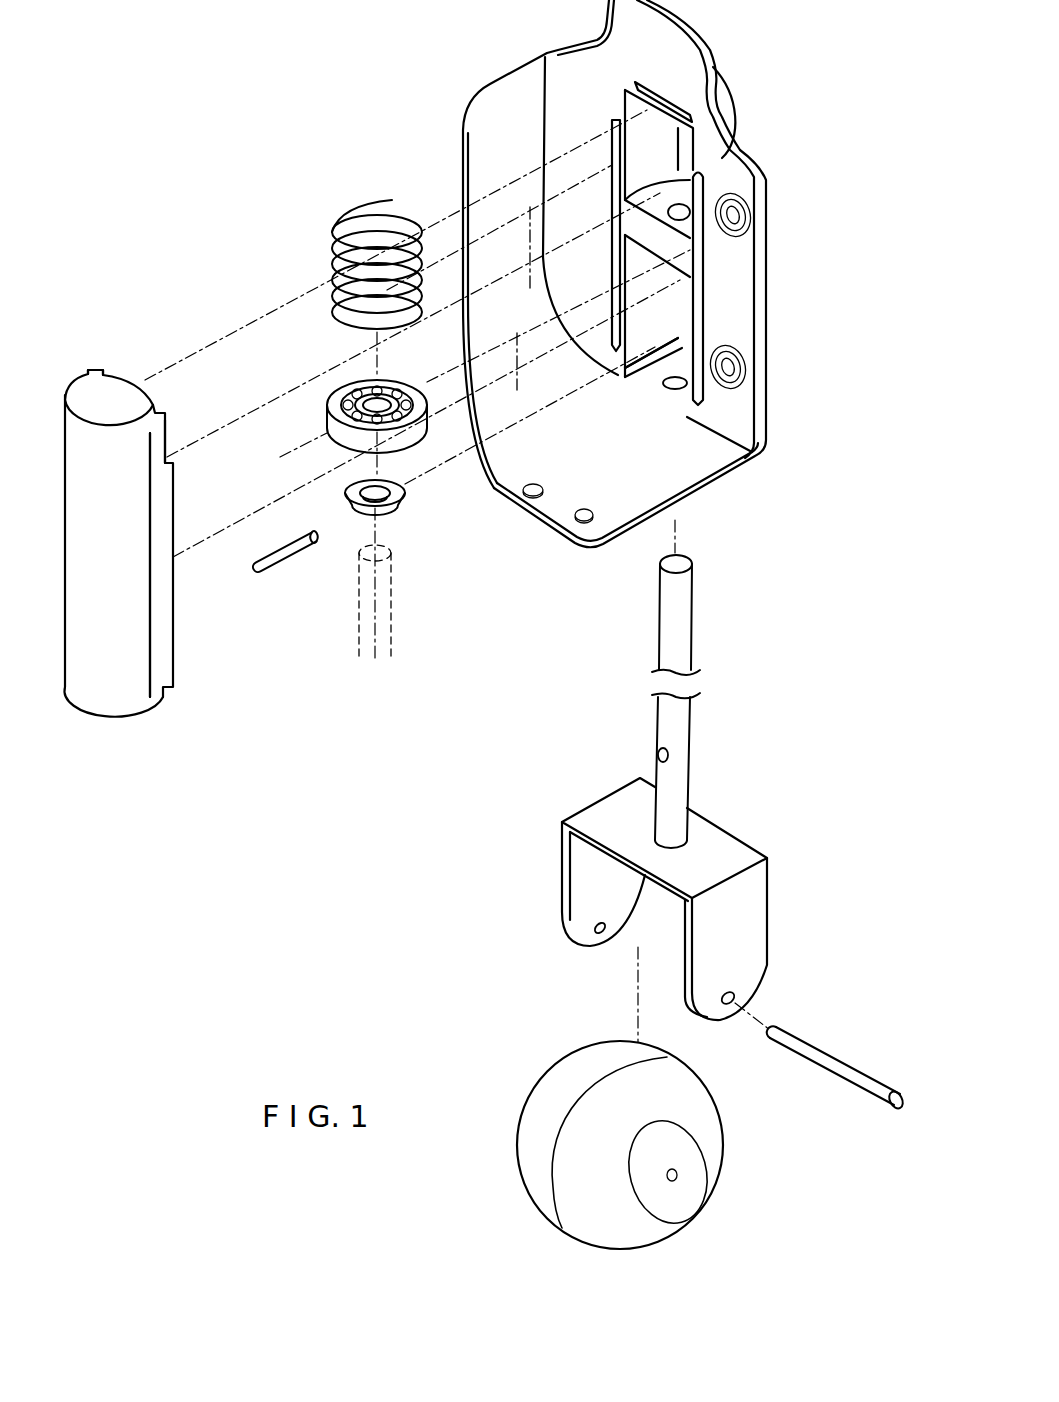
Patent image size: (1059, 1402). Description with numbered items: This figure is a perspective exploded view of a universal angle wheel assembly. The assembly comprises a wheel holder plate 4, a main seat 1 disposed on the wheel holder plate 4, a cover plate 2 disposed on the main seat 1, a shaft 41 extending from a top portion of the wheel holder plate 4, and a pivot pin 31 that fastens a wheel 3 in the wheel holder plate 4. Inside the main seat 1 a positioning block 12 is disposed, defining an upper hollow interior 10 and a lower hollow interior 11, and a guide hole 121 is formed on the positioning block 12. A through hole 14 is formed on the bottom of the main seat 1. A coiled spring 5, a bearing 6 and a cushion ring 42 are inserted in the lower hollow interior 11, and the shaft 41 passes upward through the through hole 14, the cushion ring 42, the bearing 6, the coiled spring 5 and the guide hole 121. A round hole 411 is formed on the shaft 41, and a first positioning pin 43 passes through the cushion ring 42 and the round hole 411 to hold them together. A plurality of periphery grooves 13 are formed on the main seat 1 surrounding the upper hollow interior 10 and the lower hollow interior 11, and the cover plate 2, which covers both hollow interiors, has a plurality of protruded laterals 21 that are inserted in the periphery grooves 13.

The main seat 1 is at (718, 48).
The upper hollow interior 10 is at (693, 157).
The guide hole 121 is at (683, 203).
The periphery grooves 13 is at (703, 250).
The positioning block 12 is at (683, 260).
The lower hollow interior 11 is at (683, 337).
The through hole 14 is at (675, 392).
The cover plate 2 is at (78, 566).
The protruded laterals 21 is at (118, 387).
The coiled spring 5 is at (322, 254).
The bearing 6 is at (323, 437).
The cushion ring 42 is at (405, 517).
The first positioning pin 43 is at (272, 568).
The shaft 41 is at (706, 630).
The round hole 411 is at (668, 753).
The wheel holder plate 4 is at (750, 852).
The wheel 3 is at (718, 1118).
The pivot pin 31 is at (841, 1072).